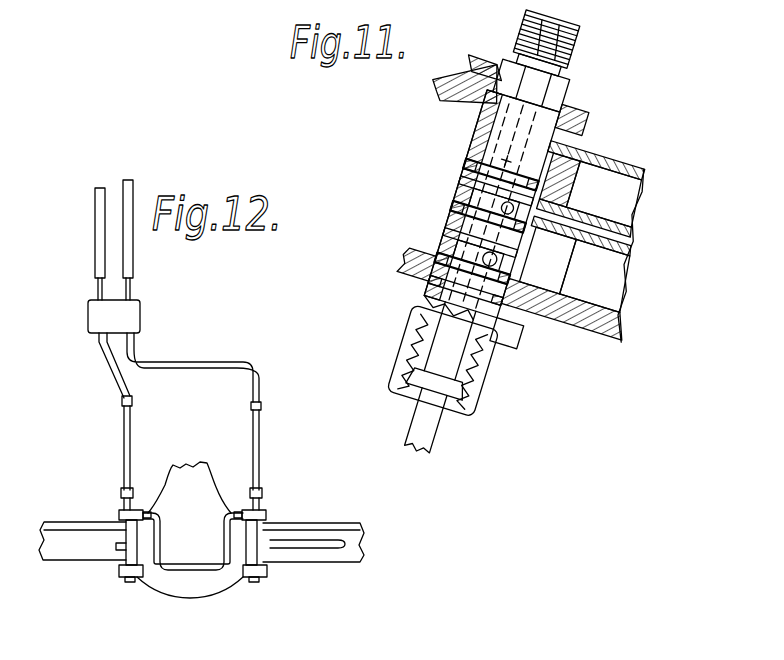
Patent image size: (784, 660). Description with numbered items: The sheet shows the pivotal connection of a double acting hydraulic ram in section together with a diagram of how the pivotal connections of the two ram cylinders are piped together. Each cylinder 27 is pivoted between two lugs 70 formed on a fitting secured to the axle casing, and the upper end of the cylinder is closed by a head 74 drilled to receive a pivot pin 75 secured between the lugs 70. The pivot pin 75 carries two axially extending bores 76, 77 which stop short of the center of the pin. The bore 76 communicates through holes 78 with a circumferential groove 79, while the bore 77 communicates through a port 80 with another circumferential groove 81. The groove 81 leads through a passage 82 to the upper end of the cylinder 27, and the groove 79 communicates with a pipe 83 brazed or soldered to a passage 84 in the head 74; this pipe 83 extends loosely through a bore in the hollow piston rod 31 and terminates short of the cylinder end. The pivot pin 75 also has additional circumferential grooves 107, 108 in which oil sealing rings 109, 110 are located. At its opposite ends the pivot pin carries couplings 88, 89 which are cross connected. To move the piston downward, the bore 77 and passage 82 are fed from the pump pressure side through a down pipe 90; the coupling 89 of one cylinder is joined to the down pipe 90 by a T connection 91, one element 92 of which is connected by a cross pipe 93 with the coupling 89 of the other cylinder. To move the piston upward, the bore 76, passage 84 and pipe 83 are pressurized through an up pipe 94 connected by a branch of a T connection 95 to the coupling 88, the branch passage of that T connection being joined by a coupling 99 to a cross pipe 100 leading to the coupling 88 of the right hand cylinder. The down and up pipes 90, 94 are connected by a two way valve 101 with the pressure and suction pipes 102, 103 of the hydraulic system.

In FIG. 11, the cylinder 27 is at (641, 172).
In FIG. 12, the cylinder 27 is at (66, 565).
In FIG. 12, the piston rod 31 is at (180, 597).
In FIG. 11, the lugs 70 is at (566, 109).
In FIG. 11, the head 74 is at (580, 191).
In FIG. 11, the pivot pin 75 is at (488, 141).
In FIG. 11, the bore 76 is at (464, 127).
In FIG. 11, the bore 77 is at (462, 337).
In FIG. 11, the holes 78 is at (545, 164).
In FIG. 11, the circumferential groove 79 is at (458, 222).
In FIG. 11, the port 80 is at (470, 261).
In FIG. 11, the circumferential groove 81 is at (458, 239).
In FIG. 11, the passage 82 is at (598, 275).
In FIG. 11, the pipe 83 is at (622, 241).
In FIG. 11, the passage 84 is at (559, 260).
In FIG. 11, the coupling 88 is at (524, 25).
In FIG. 12, the coupling 88 is at (120, 512).
In FIG. 11, the coupling 89 is at (432, 372).
In FIG. 12, the coupling 89 is at (268, 512).
In FIG. 11, the down pipe 90 is at (455, 432).
In FIG. 12, the down pipe 90 is at (254, 418).
In FIG. 12, the T connection 91 is at (262, 492).
In FIG. 12, the element of the T connection 92 is at (238, 512).
In FIG. 12, the cross pipe 93 is at (222, 546).
In FIG. 12, the up pipe 94 is at (131, 387).
In FIG. 12, the T connection 95 is at (122, 490).
In FIG. 12, the coupling 99 is at (143, 512).
In FIG. 12, the cross pipe 100 is at (160, 528).
In FIG. 12, the two way valve 101 is at (142, 318).
In FIG. 12, the pressure pipe 102 is at (130, 181).
In FIG. 12, the suction pipe 103 is at (104, 189).
In FIG. 11, the circumferential groove 107 is at (478, 164).
In FIG. 11, the circumferential groove 108 is at (505, 338).
In FIG. 11, the oil sealing ring 109 is at (468, 191).
In FIG. 11, the oil sealing ring 110 is at (448, 288).